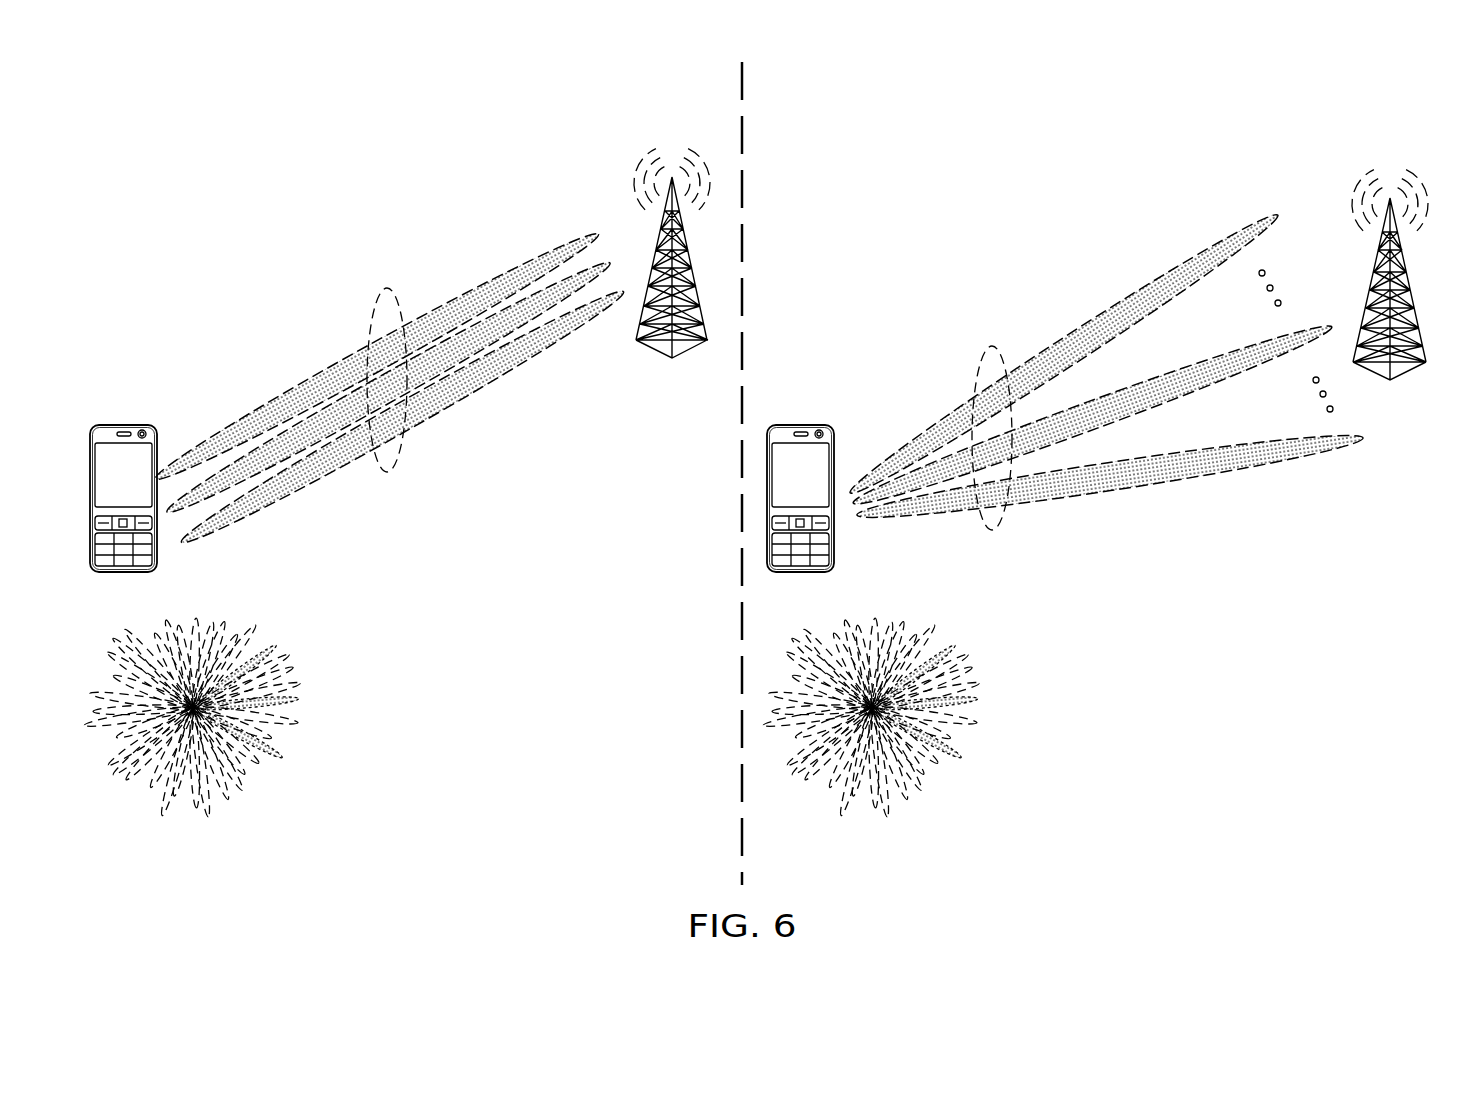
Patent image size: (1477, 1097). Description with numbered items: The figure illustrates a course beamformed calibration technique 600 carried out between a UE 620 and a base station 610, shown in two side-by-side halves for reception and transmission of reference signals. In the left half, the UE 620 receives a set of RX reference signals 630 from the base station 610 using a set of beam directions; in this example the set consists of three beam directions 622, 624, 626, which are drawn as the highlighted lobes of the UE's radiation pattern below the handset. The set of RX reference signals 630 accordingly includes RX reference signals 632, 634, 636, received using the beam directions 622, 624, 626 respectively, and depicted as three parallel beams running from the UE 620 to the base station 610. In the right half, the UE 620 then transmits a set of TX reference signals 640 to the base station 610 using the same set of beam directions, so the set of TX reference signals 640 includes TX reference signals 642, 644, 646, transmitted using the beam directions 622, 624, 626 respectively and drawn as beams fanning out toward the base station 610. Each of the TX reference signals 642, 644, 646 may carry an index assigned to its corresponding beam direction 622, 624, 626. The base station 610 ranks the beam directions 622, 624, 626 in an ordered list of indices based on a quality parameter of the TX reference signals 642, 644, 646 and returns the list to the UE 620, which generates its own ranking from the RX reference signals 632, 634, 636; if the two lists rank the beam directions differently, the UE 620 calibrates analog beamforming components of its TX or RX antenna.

The course beamformed calibration technique 600 is at (252, 138).
The base station 610 is at (650, 352).
The UE 620 is at (128, 425).
The beam direction 622 is at (277, 645).
The beam direction 624 is at (300, 698).
The beam direction 626 is at (283, 757).
The set of RX reference signals 630 is at (387, 289).
The RX reference signal 632 is at (515, 262).
The RX reference signal 634 is at (607, 262).
The RX reference signal 636 is at (422, 425).
The set of TX reference signals 640 is at (992, 347).
The TX reference signal 642 is at (1205, 252).
The TX reference signal 644 is at (1245, 347).
The TX reference signal 646 is at (1297, 440).